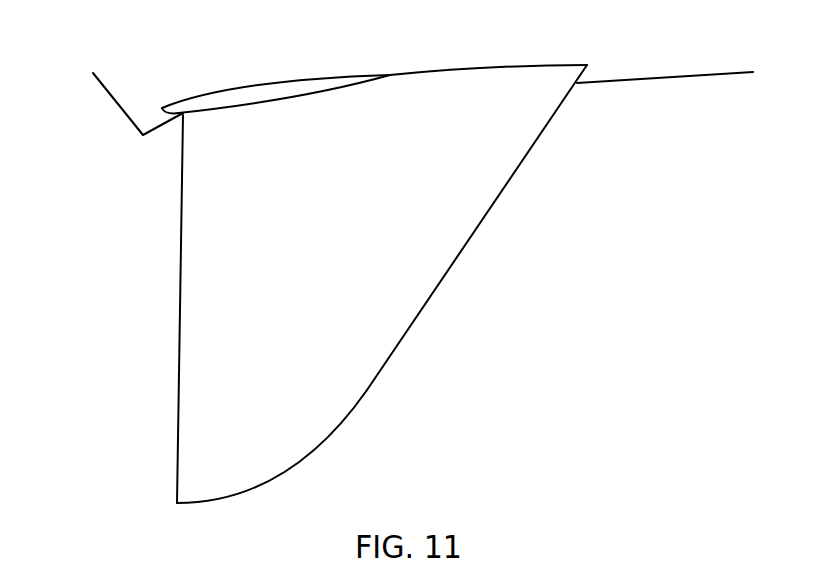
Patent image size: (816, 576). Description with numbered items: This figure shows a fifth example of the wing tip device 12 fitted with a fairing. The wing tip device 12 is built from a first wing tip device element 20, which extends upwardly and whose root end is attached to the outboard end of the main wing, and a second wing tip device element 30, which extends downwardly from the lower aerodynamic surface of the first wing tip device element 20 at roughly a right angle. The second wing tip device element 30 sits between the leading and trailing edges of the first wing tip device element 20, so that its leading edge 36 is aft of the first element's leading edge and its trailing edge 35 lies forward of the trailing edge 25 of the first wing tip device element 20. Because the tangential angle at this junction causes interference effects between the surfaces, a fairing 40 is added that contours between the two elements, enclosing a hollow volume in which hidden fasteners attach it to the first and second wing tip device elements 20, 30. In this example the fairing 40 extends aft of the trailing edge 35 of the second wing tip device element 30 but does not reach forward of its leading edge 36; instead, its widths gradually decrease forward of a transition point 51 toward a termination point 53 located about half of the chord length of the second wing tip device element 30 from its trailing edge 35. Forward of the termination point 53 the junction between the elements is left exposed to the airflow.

The wing tip device 12 is at (585, 218).
The first wing tip device element 20 is at (675, 55).
The trailing edge 25 is at (108, 95).
The second wing tip device element 30 is at (334, 284).
The trailing edge 35 is at (180, 280).
The leading edge 36 is at (462, 255).
The fairing 40 is at (293, 90).
The transition point 51 is at (260, 103).
The termination point 53 is at (388, 73).